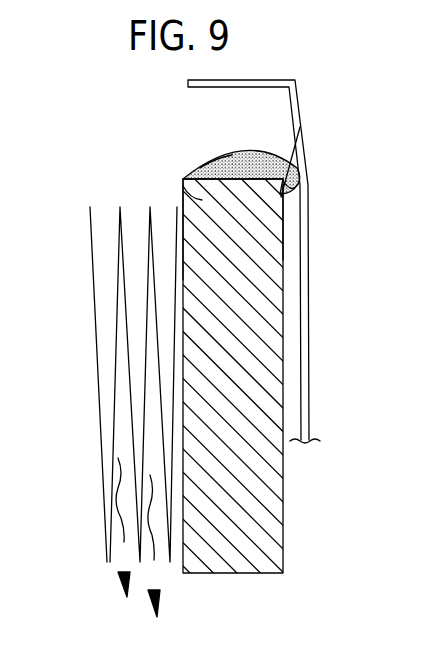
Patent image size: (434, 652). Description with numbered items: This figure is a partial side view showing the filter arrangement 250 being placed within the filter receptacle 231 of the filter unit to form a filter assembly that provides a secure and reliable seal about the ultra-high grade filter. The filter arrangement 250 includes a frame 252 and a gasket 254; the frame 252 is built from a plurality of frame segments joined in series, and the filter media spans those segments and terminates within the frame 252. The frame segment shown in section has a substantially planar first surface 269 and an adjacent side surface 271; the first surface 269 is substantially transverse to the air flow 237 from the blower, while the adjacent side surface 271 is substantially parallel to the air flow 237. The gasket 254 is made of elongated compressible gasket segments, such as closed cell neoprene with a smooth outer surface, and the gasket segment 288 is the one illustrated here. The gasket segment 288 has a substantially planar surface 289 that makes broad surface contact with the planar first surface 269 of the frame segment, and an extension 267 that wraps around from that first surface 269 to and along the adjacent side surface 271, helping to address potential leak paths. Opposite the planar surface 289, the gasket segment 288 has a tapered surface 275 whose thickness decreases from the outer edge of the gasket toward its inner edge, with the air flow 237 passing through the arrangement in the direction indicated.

The filter receptacle 231 is at (318, 80).
The air flow 237 is at (122, 571).
The filter arrangement 250 is at (217, 302).
The frame 252 is at (297, 359).
The gasket 254 is at (173, 156).
The extension 267 is at (300, 175).
The first surface 269 is at (300, 127).
The side surface 271 is at (284, 201).
The tapered surface 275 is at (247, 157).
The gasket segment 288 is at (212, 165).
The substantially planar surface 289 is at (183, 197).